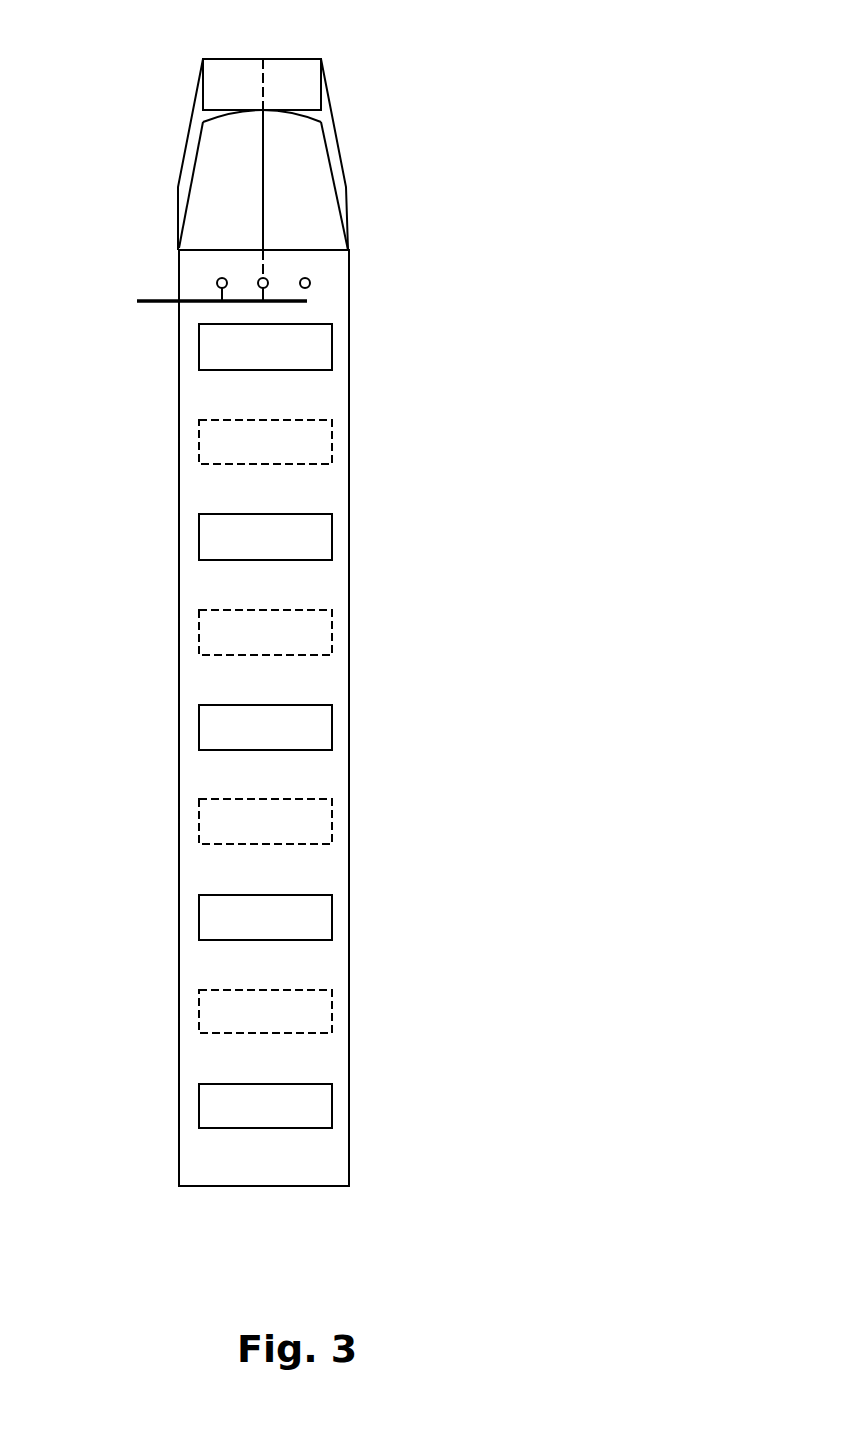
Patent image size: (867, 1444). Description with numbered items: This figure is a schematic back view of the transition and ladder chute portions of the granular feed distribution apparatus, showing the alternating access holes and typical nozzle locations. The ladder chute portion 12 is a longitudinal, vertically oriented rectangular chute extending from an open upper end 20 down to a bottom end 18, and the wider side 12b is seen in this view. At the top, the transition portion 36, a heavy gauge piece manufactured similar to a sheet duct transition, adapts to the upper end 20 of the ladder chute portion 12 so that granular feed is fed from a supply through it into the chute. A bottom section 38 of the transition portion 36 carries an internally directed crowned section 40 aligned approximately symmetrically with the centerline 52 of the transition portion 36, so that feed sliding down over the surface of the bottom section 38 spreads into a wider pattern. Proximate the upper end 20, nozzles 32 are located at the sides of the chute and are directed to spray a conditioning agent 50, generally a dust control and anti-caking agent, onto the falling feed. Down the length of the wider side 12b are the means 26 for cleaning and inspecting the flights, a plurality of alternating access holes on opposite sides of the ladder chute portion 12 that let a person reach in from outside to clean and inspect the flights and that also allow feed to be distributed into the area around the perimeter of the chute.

The ladder chute portion 12 is at (349, 508).
The wider side 12b is at (315, 408).
The bottom end 18 is at (317, 1182).
The open upper end 20 is at (188, 253).
The means for cleaning and inspecting 26 is at (325, 917).
The nozzle 32 is at (305, 288).
The transition portion 36 is at (339, 175).
The bottom section 38 is at (285, 198).
The crowned section 40 is at (263, 152).
The conditioning agent 50 is at (140, 303).
The centerline 52 is at (263, 83).